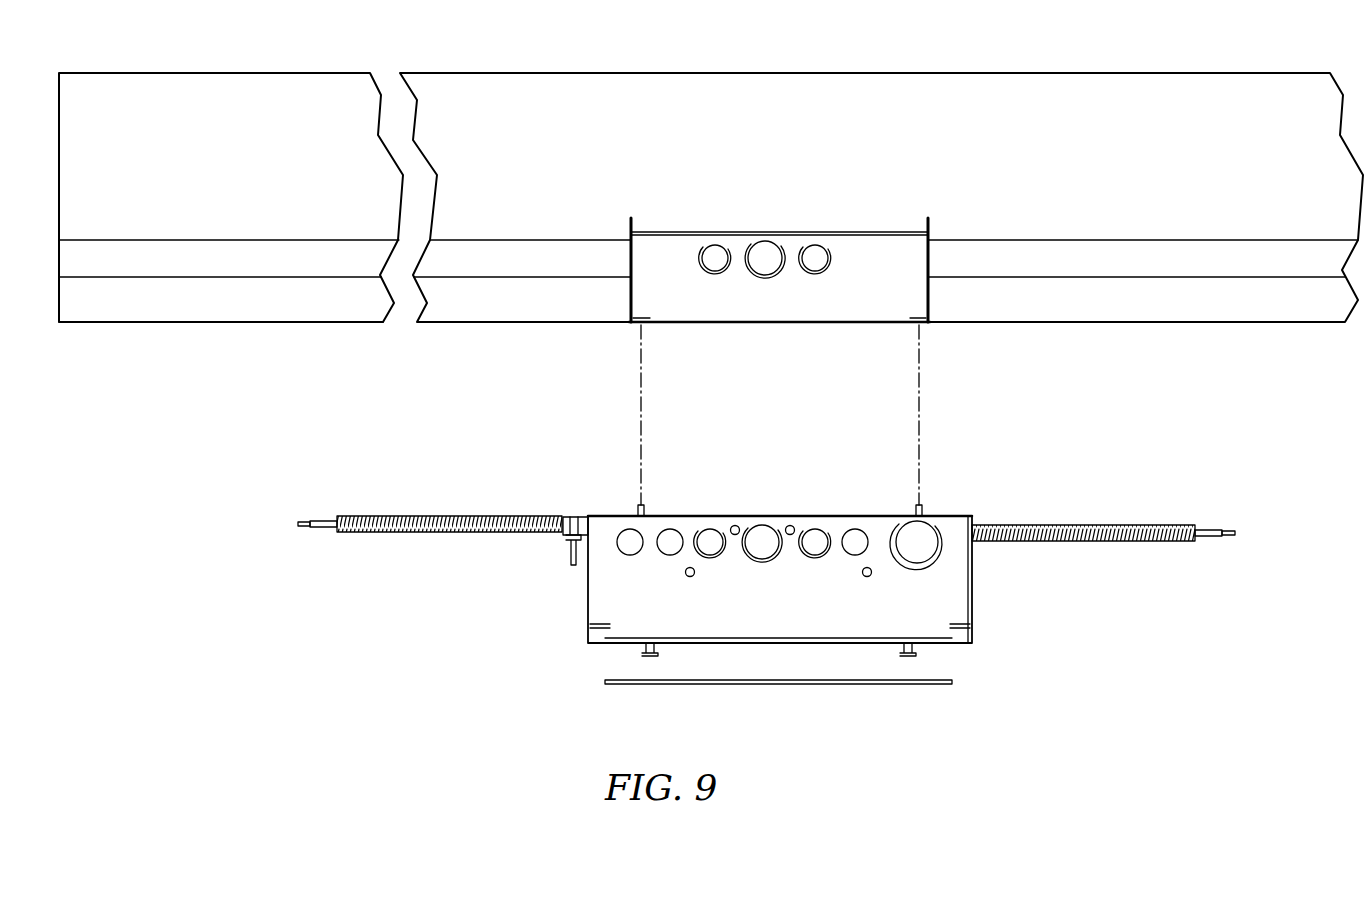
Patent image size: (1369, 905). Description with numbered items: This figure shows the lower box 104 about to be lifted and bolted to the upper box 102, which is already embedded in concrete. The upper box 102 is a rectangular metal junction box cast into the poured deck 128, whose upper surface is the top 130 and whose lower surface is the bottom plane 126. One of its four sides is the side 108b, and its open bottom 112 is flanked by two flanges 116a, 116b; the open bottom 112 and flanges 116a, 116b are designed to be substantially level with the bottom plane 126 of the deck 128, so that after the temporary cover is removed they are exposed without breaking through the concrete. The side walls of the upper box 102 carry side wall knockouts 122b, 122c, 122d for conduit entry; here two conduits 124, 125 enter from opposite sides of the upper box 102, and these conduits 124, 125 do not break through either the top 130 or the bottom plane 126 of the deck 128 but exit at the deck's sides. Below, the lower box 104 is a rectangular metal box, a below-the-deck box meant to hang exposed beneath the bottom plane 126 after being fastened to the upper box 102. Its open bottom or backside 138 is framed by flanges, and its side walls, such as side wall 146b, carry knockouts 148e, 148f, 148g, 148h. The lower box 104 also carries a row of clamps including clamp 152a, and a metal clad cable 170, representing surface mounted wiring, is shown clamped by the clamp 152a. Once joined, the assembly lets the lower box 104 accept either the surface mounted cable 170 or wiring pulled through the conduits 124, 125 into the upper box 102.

The top of the deck 130 is at (121, 64).
The poured deck 128 is at (260, 166).
The bottom plane of the deck 126 is at (232, 342).
The conduit 124 is at (312, 257).
The conduit 125 is at (1198, 258).
The upper box 102 is at (829, 210).
The side 108b is at (905, 258).
The open bottom 112 is at (741, 336).
The flange 116a is at (630, 333).
The flange 116b is at (931, 333).
The side wall knockout 122b is at (715, 262).
The side wall knockout 122c is at (765, 263).
The side wall knockout 122d is at (815, 262).
The open bottom or backside 138 is at (768, 504).
The knockout 148e is at (708, 548).
The knockout 148f is at (762, 550).
The knockout 148g is at (815, 548).
The knockout 148h is at (923, 552).
The clamp 152a is at (563, 537).
The side wall 146b is at (593, 590).
The metal clad cable 170 is at (380, 530).
The lower box 104 is at (1016, 636).